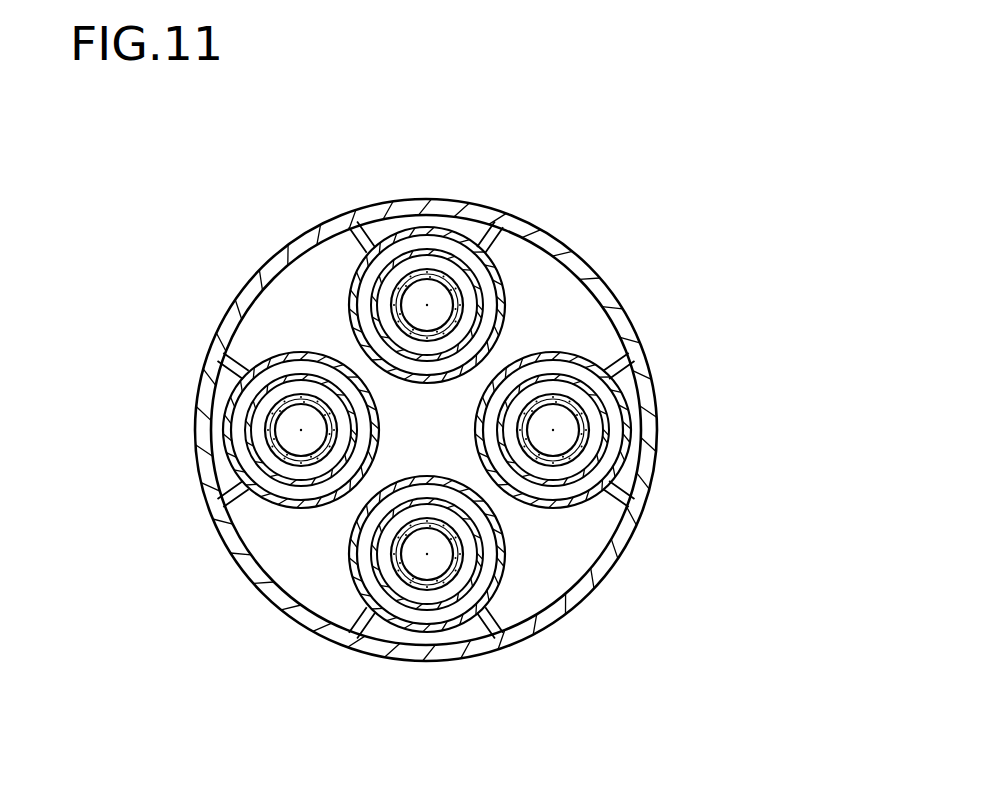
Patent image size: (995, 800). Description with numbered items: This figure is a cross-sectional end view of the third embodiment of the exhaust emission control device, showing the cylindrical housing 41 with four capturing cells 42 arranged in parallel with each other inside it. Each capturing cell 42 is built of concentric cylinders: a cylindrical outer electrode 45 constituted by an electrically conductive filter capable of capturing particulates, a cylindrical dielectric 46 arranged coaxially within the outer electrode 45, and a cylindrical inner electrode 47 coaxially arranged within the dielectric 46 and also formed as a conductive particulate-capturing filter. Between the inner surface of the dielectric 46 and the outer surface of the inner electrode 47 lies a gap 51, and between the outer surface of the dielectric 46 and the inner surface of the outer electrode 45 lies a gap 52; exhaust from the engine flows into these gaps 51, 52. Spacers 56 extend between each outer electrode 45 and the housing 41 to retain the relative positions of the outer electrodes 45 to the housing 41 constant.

The cylindrical housing 41 is at (607, 286).
The capturing cell 42 is at (425, 419).
The outer electrode 45 is at (412, 605).
The dielectric 46 is at (438, 605).
The inner electrode 47 is at (452, 605).
The gap 51 is at (410, 598).
The gap 52 is at (347, 593).
The spacer 56 is at (505, 618).